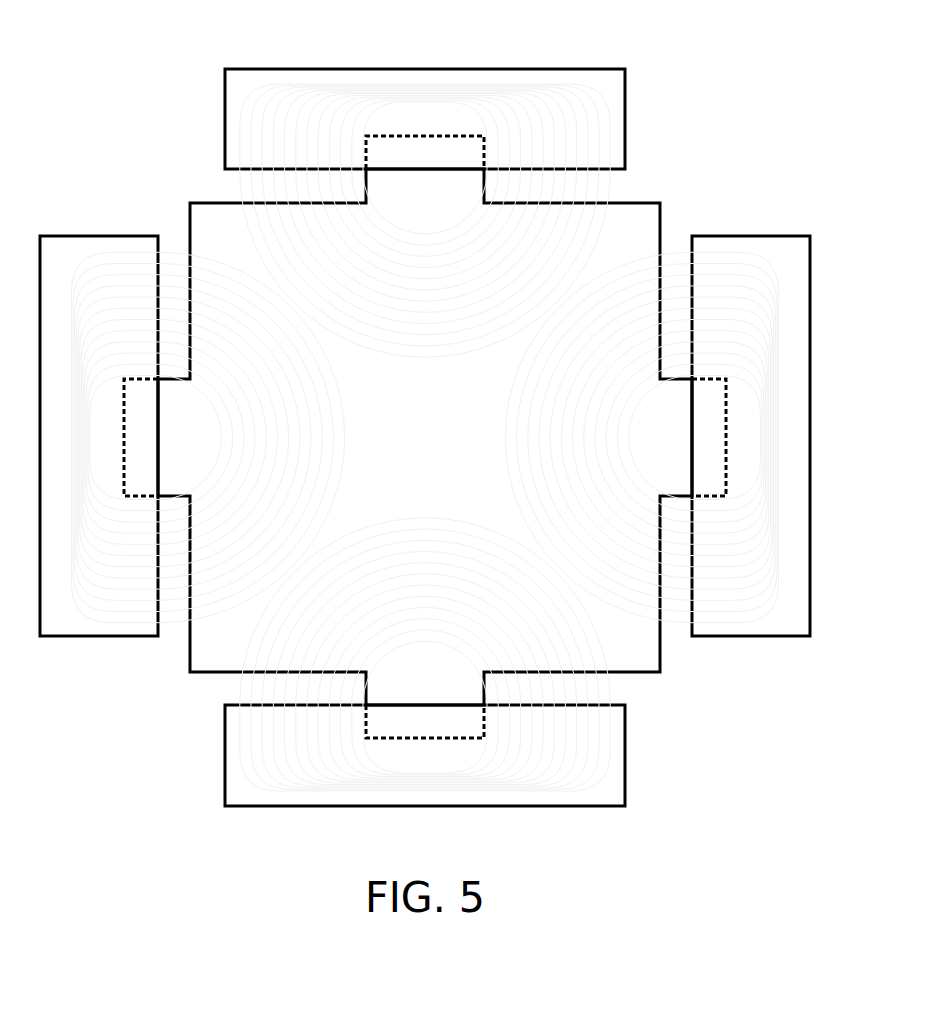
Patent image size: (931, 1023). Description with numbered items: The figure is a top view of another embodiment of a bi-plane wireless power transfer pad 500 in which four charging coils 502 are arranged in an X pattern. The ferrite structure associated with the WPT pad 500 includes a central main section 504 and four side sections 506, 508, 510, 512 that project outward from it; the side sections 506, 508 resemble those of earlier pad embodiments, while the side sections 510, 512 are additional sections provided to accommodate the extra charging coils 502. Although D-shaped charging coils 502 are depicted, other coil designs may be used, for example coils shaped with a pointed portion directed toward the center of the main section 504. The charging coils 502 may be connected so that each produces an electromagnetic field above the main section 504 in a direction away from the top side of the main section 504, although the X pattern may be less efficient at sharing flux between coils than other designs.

The bi-plane wireless power transfer pad 500 is at (138, 88).
The charging coils 502 is at (513, 405).
The main section 504 is at (658, 672).
The side section 506 is at (98, 638).
The side section 508 is at (752, 638).
The side section 510 is at (583, 69).
The side section 512 is at (582, 806).